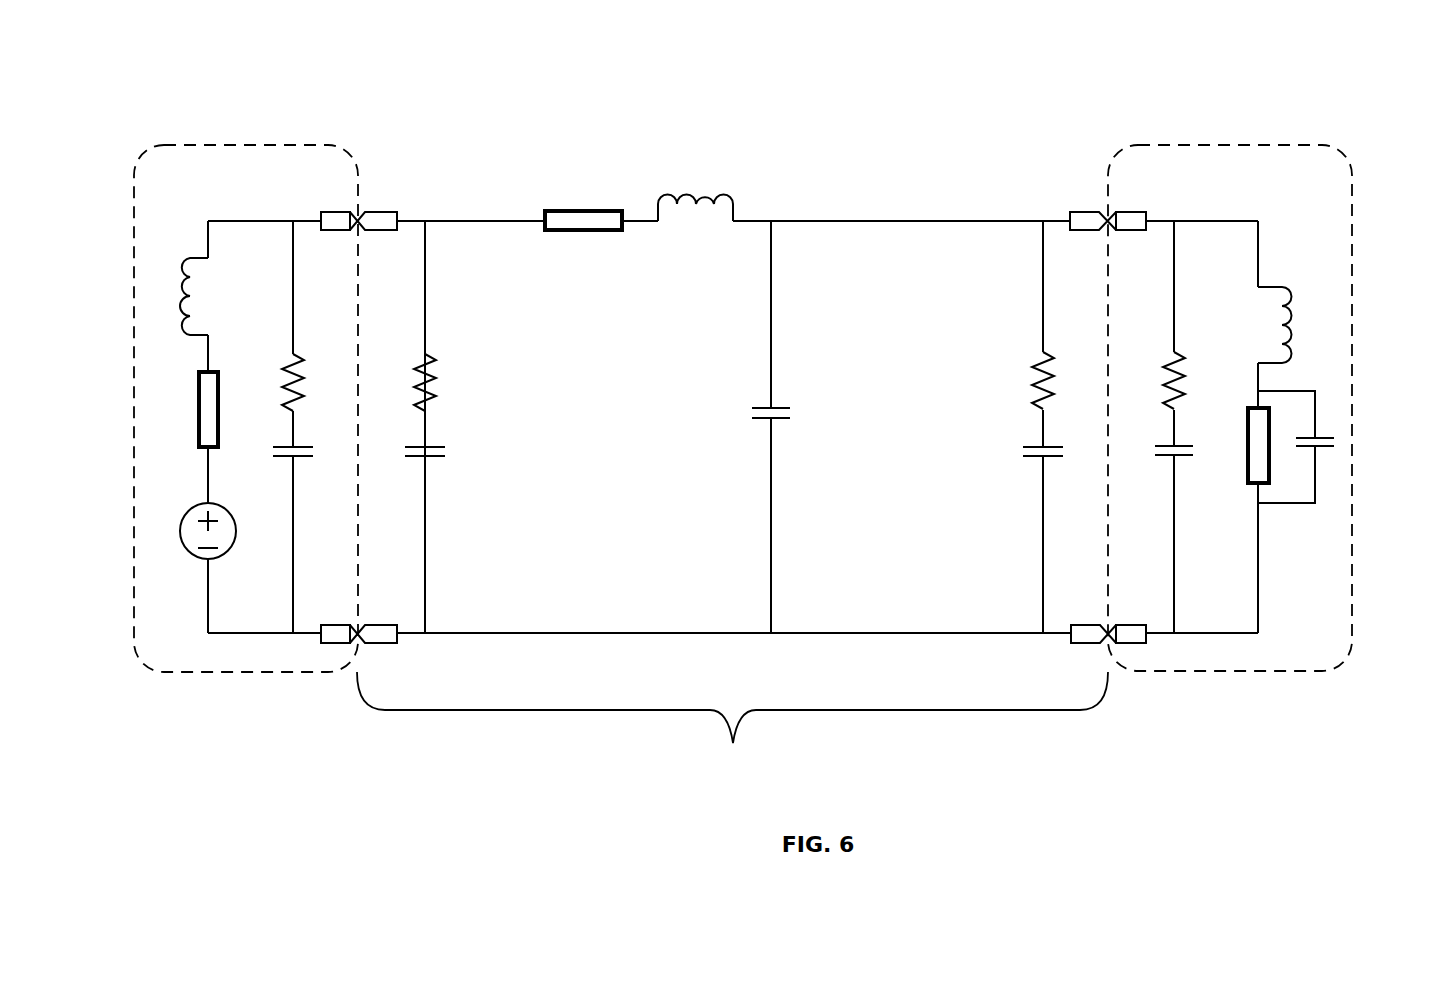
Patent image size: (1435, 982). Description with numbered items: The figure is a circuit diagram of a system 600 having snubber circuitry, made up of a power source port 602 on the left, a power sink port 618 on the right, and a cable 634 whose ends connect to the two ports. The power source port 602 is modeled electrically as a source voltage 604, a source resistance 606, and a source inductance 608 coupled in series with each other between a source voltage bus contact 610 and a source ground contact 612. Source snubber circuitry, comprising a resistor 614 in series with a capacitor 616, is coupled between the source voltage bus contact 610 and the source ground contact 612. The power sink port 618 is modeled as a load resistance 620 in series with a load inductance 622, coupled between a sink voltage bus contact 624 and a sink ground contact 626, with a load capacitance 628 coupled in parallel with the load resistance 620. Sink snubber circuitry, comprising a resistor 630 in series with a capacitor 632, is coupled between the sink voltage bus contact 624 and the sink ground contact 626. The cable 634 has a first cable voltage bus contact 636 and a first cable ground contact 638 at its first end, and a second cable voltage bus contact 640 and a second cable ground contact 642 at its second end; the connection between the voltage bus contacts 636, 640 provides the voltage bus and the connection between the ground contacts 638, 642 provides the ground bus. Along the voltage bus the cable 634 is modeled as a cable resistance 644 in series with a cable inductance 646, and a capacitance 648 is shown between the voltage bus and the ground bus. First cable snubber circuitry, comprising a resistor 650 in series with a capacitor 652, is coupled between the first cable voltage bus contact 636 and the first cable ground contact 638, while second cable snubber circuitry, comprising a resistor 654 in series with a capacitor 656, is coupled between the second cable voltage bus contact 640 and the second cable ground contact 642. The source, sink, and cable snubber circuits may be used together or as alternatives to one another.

The system 600 is at (150, 72).
The power source port 602 is at (293, 147).
The source voltage 604 is at (183, 538).
The source resistance 606 is at (197, 408).
The source inductance 608 is at (182, 332).
The source voltage bus contact 610 is at (340, 230).
The source ground contact 612 is at (333, 643).
The resistor 614 is at (287, 358).
The capacitor 616 is at (283, 458).
The power sink port 618 is at (1203, 147).
The load resistance 620 is at (1248, 437).
The load inductance 622 is at (1288, 317).
The sink voltage bus contact 624 is at (1127, 230).
The sink ground contact 626 is at (1133, 643).
The load capacitance 628 is at (1323, 447).
The resistor 630 is at (1180, 355).
The capacitor 632 is at (1183, 457).
The cable 634 is at (732, 725).
The first cable voltage bus contact 636 is at (383, 212).
The first cable ground contact 638 is at (377, 643).
The second cable voltage bus contact 640 is at (1085, 212).
The second cable ground contact 642 is at (1088, 645).
The cable resistance 644 is at (588, 212).
The cable inductance 646 is at (707, 192).
The capacitance 648 is at (762, 420).
The resistor 650 is at (432, 372).
The capacitor 652 is at (440, 458).
The resistor 654 is at (1033, 362).
The capacitor 656 is at (1033, 457).